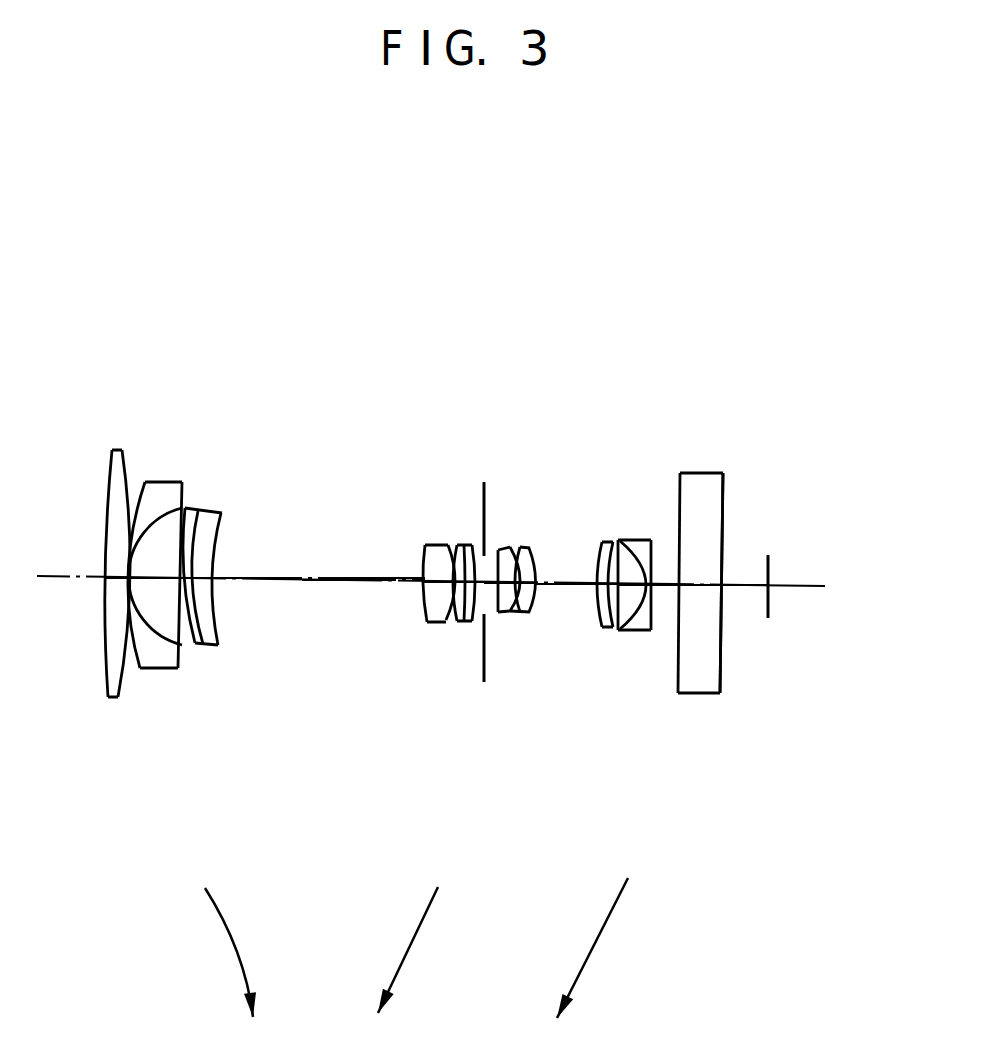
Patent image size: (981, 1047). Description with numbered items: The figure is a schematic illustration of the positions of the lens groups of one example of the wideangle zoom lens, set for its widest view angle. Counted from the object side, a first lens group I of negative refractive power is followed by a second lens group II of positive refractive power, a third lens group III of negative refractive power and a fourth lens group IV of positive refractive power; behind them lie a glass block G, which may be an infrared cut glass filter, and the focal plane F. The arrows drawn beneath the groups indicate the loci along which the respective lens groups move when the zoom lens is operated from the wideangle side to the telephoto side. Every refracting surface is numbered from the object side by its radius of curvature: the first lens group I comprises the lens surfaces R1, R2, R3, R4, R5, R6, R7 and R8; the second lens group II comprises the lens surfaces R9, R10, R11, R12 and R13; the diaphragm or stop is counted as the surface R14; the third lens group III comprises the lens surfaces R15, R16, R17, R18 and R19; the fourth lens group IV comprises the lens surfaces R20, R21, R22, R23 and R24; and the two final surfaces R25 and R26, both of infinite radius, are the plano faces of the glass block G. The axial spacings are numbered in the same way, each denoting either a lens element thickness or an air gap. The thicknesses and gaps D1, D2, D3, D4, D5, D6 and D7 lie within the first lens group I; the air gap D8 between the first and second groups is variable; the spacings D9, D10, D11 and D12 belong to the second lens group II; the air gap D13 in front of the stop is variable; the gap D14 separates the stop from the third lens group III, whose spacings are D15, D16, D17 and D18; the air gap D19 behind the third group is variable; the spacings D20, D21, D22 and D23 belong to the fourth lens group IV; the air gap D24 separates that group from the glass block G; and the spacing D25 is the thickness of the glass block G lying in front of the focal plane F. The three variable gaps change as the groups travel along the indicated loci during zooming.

The first lens group I is at (53, 203).
The second lens group II is at (310, 205).
The third lens group III is at (502, 207).
The fourth lens group IV is at (632, 210).
The glass block G is at (862, 212).
The focal plane F is at (773, 556).
The first lens surface R1 is at (105, 472).
The second lens surface R2 is at (120, 457).
The third lens surface R3 is at (136, 484).
The fourth lens surface R4 is at (158, 508).
The fifth lens surface R5 is at (187, 506).
The sixth lens surface R6 is at (196, 508).
The seventh lens surface R7 is at (210, 512).
The eighth lens surface R8 is at (233, 520).
The ninth lens surface R9 is at (423, 547).
The tenth lens surface R10 is at (428, 543).
The eleventh lens surface R11 is at (445, 543).
The twelfth lens surface R12 is at (459, 543).
The thirteenth lens surface R13 is at (473, 543).
The diaphragm R14 is at (489, 490).
The fifteenth lens surface R15 is at (493, 547).
The sixteenth lens surface R16 is at (507, 545).
The seventeenth lens surface R17 is at (518, 547).
The eighteenth lens surface R18 is at (533, 547).
The nineteenth lens surface R19 is at (598, 543).
The twentieth lens surface R20 is at (613, 543).
The twenty-first lens surface R21 is at (632, 543).
The twenty-second lens surface R22 is at (647, 543).
The twenty-third lens surface R23 is at (660, 543).
The twenty-fourth lens surface R24 is at (679, 478).
The twenty-fifth lens surface R25 is at (708, 474).
The twenty-sixth lens surface R26 is at (725, 497).
The first lens thickness D1 is at (104, 580).
The second air gap D2 is at (130, 580).
The third lens thickness D3 is at (138, 580).
The fourth air gap D4 is at (180, 580).
The fifth lens thickness D5 is at (186, 580).
The sixth air gap D6 is at (198, 580).
The seventh lens thickness D7 is at (214, 580).
The eighth air gap D8 is at (302, 580).
The ninth lens thickness D9 is at (423, 583).
The tenth lens thickness D10 is at (433, 587).
The eleventh air gap D11 is at (450, 590).
The twelfth lens thickness D12 is at (462, 595).
The thirteenth air gap D13 is at (472, 595).
The fourteenth air gap D14 is at (491, 587).
The fifteenth lens thickness D15 is at (510, 590).
The sixteenth air gap D16 is at (520, 590).
The seventeenth lens thickness D17 is at (533, 590).
The eighteenth lens thickness D18 is at (565, 590).
The nineteenth air gap D19 is at (598, 590).
The twentieth lens thickness D20 is at (615, 590).
The twenty-first air gap D21 is at (628, 590).
The twenty-second lens thickness D22 is at (642, 590).
The twenty-third lens thickness D23 is at (655, 590).
The twenty-fourth air gap D24 is at (665, 590).
The twenty-fifth thickness D25 is at (700, 590).